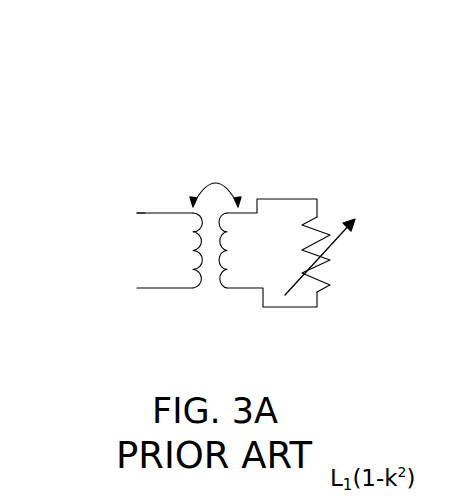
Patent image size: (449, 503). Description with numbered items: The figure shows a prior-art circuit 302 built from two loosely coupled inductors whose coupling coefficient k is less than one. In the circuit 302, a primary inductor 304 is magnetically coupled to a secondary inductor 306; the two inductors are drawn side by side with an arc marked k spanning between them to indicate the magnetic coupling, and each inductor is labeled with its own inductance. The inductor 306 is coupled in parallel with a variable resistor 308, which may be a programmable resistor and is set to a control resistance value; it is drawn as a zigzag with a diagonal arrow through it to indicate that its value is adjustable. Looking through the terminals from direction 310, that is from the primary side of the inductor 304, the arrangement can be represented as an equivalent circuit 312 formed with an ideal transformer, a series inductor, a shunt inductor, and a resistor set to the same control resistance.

The circuit 302 is at (265, 135).
The inductor 304 is at (202, 300).
The inductor 306 is at (222, 298).
The variable resistor 308 is at (332, 293).
The direction 310 is at (137, 252).
The equivalent circuit 312 is at (440, 316).